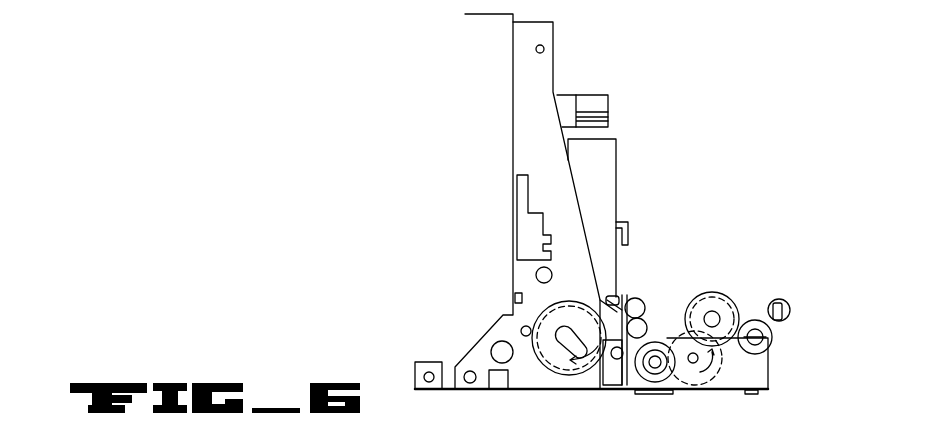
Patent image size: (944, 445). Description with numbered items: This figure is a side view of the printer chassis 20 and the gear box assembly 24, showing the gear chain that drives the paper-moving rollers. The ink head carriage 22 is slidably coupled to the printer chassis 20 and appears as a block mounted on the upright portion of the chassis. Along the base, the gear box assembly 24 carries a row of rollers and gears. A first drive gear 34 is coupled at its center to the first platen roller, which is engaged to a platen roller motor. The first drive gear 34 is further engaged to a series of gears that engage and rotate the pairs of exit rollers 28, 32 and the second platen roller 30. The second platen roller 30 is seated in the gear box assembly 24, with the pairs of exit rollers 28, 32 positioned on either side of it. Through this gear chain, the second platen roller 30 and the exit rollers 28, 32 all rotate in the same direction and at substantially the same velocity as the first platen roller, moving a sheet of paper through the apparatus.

The printer chassis 20 is at (556, 42).
The ink head carriage 22 is at (616, 153).
The gear box assembly 24 is at (770, 386).
The exit rollers 28 is at (637, 297).
The second platen roller 30 is at (688, 293).
The exit rollers 32 is at (779, 298).
The first drive gear 34 is at (553, 372).